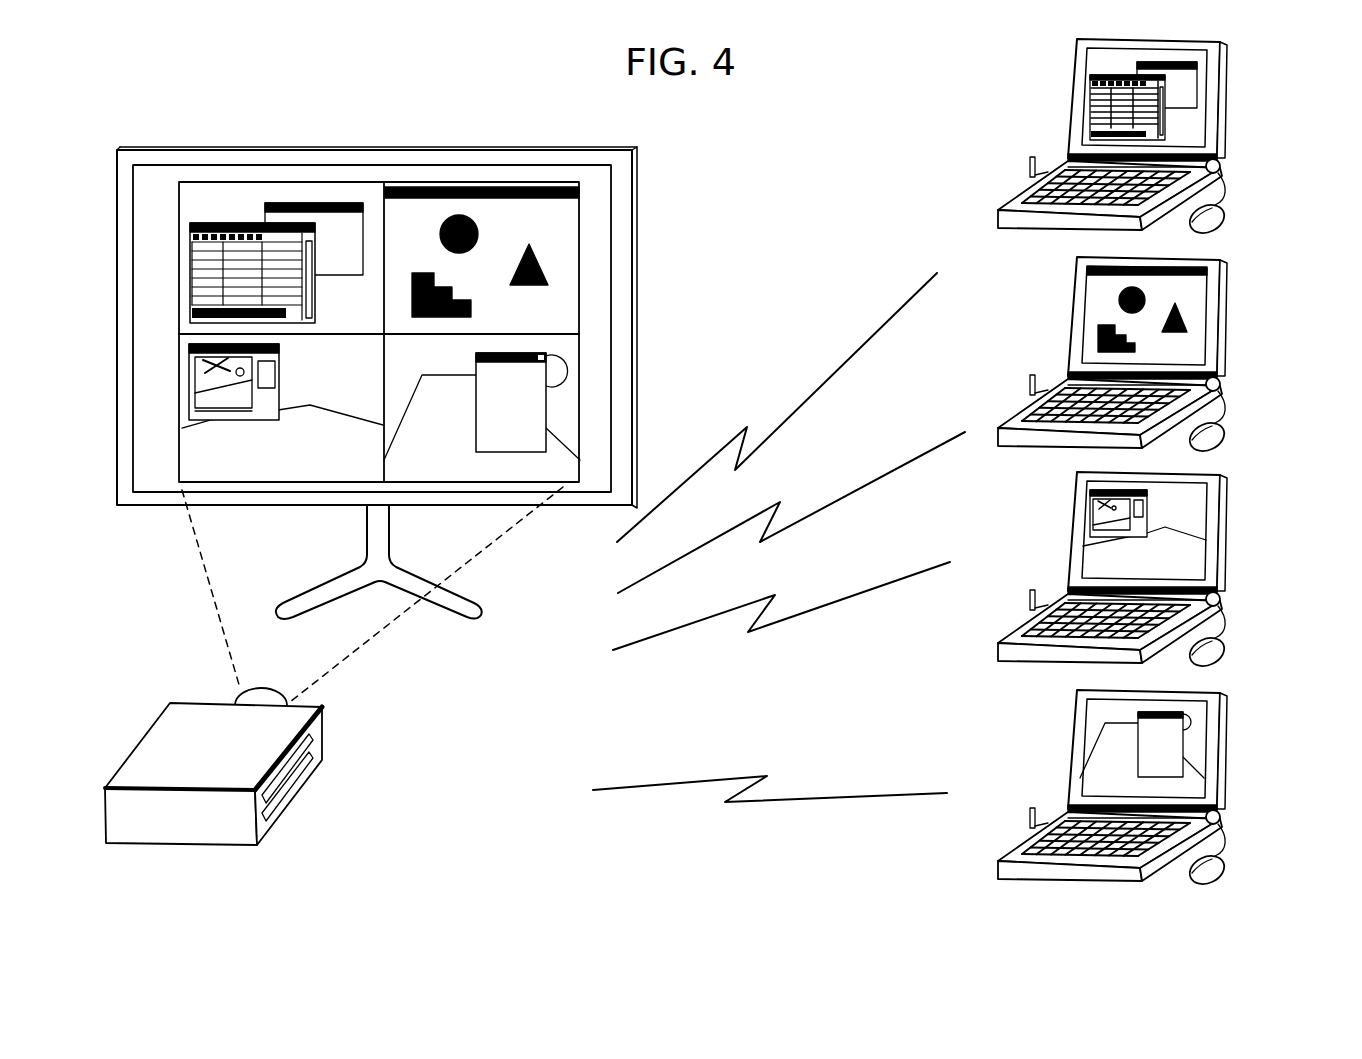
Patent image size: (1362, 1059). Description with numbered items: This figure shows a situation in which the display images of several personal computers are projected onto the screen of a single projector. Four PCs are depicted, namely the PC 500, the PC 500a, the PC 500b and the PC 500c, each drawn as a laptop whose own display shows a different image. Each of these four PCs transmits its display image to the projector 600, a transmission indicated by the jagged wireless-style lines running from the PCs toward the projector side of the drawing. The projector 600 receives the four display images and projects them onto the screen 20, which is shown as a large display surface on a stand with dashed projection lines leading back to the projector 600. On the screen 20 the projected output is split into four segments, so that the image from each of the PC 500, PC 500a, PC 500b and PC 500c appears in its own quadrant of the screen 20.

The screen 20 is at (357, 149).
The projector 600 is at (147, 732).
The PC 500 is at (1230, 78).
The PC 500a is at (1230, 296).
The PC 500b is at (1230, 511).
The PC 500c is at (1230, 729).